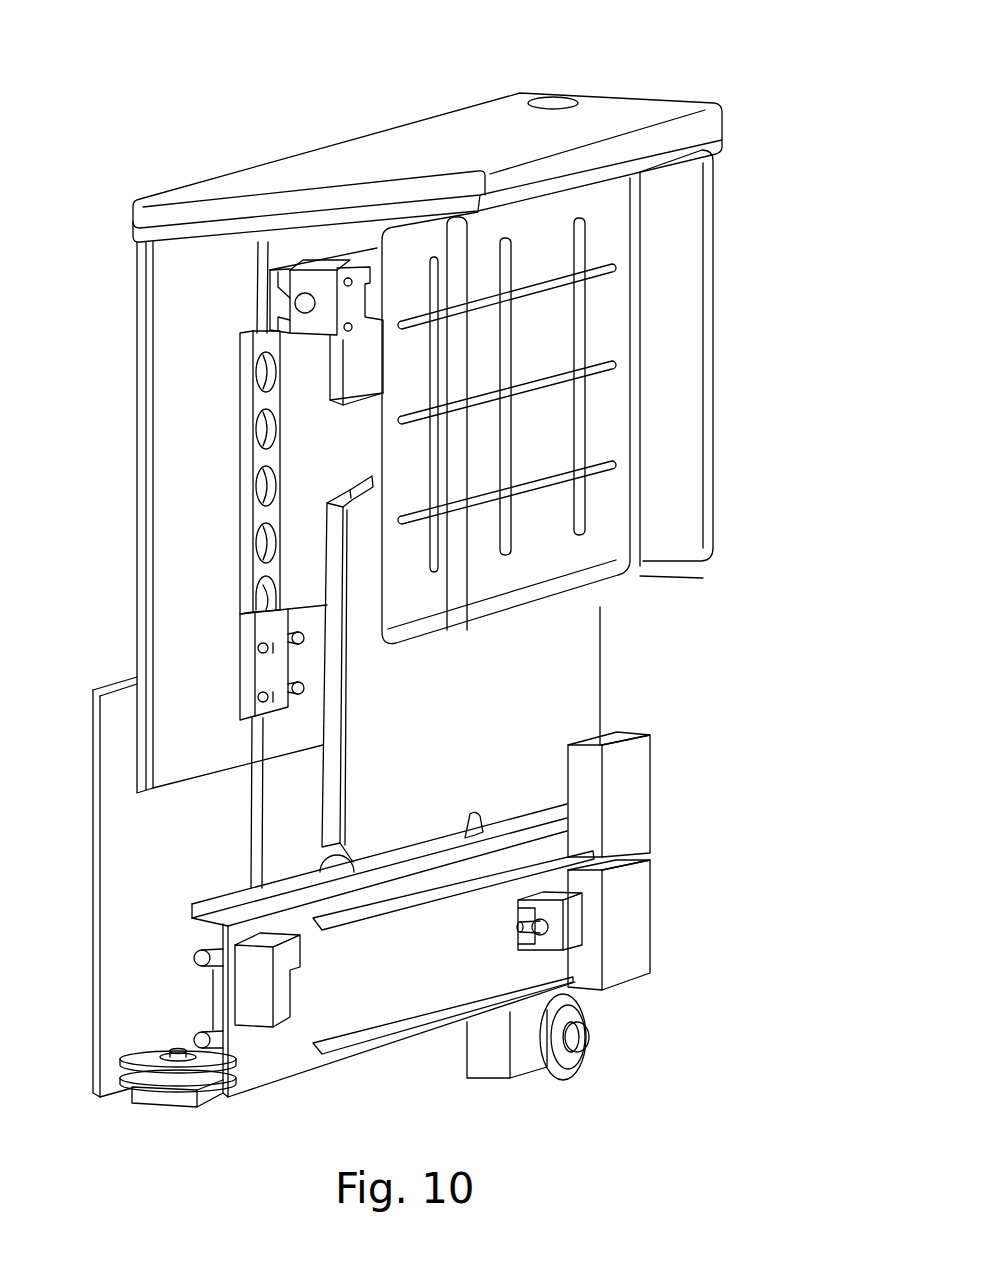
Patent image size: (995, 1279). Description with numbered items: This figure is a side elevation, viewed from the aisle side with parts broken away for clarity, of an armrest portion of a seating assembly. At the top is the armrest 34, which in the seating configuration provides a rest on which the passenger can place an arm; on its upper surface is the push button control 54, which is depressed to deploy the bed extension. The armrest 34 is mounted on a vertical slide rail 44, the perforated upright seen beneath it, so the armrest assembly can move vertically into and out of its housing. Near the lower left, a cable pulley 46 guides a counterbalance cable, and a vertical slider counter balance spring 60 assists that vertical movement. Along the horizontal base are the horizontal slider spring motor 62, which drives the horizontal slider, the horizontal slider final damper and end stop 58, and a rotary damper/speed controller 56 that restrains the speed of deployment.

The armrest 34 is at (650, 106).
The push button control 54 is at (553, 102).
The vertical slide rail 44 is at (263, 460).
The horizontal slider spring motor 62 is at (633, 800).
The vertical slider counter balance spring 60 is at (630, 917).
The horizontal slider final damper and end stop 58 is at (577, 937).
The rotary damper/speed controller 56 is at (573, 1076).
The cable pulley 46 is at (207, 1078).